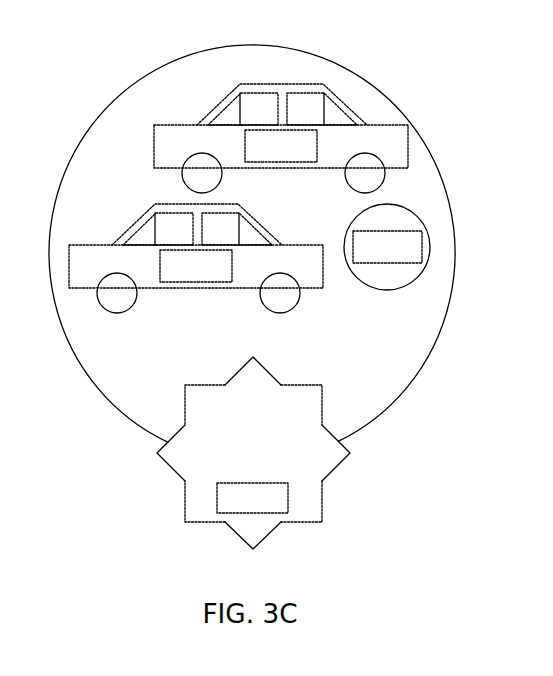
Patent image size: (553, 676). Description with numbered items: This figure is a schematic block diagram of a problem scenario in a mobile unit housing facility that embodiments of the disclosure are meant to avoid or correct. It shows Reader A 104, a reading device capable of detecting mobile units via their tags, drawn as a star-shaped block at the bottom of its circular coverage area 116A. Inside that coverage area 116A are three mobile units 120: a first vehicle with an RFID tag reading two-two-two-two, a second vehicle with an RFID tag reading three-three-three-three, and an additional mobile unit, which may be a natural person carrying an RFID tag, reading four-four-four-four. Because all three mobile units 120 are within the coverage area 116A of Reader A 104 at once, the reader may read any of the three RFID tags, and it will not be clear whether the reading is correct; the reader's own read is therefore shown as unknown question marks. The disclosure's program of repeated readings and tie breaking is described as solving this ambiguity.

The coverage area 116A is at (422, 431).
The mobile unit 120 is at (512, 280).
The reading device 104 is at (272, 475).